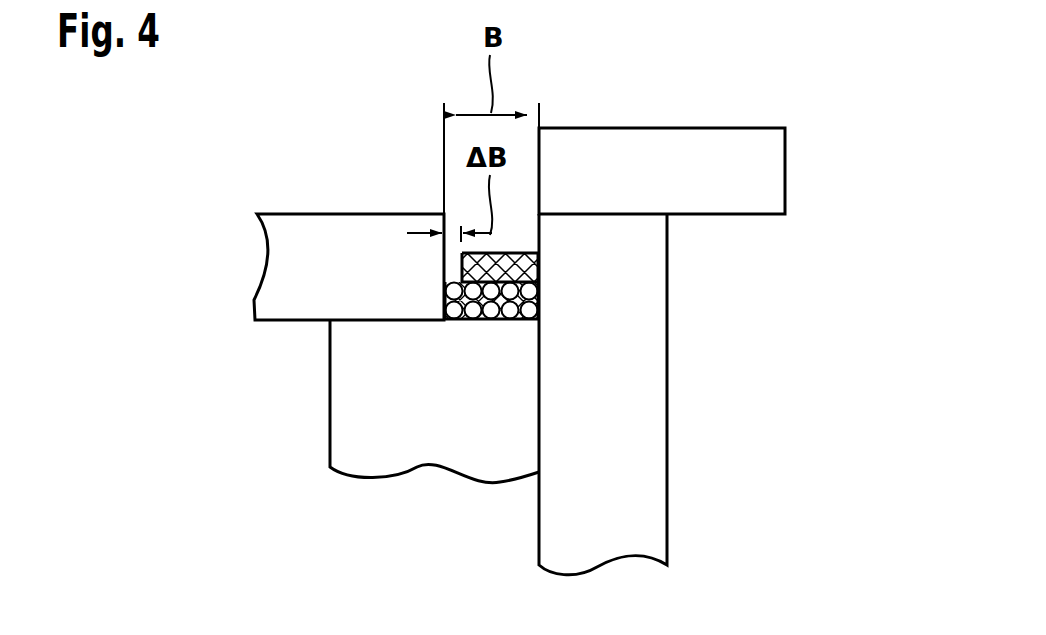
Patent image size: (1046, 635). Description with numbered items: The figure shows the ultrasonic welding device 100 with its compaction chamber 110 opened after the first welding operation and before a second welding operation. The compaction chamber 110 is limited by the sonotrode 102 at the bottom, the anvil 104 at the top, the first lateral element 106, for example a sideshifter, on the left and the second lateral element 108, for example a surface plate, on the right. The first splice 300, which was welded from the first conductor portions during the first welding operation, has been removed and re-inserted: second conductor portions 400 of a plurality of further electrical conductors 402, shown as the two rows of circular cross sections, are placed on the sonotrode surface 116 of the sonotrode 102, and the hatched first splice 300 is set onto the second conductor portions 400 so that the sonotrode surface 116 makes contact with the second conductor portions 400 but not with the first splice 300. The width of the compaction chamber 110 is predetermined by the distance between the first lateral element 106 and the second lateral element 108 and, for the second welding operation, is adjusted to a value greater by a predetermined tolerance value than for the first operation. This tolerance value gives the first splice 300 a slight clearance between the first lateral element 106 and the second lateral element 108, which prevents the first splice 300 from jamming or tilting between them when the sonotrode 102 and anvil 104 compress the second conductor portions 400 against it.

The ultrasonic welding device 100 is at (847, 103).
The sonotrode 102 is at (352, 398).
The anvil 104 is at (702, 158).
The first lateral element 106 is at (353, 237).
The second lateral element 108 is at (643, 393).
The compaction chamber 110 is at (522, 231).
The sonotrode surface 116 is at (453, 320).
The first splice 300 is at (520, 271).
The second conductor portions 400 is at (520, 320).
The further electrical conductors 402 is at (507, 290).